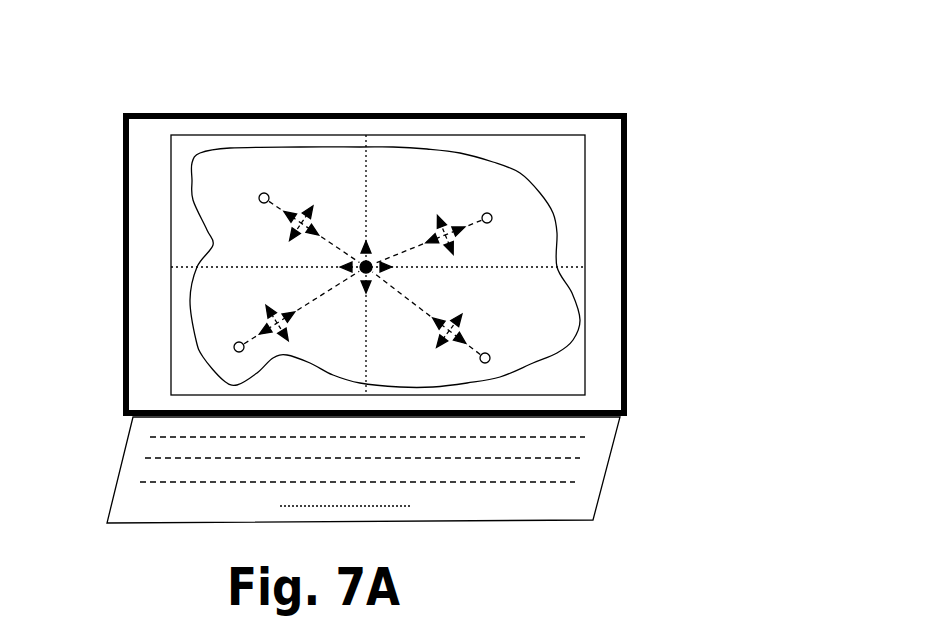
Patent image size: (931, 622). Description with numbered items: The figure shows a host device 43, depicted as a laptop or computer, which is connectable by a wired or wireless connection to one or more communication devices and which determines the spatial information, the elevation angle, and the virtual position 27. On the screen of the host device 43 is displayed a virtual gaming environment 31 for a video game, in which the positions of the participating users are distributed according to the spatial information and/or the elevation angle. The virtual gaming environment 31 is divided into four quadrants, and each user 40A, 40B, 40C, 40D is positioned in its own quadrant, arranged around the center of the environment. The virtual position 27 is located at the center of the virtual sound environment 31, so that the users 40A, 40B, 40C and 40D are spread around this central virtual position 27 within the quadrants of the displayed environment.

The host device 43 is at (650, 55).
The virtual gaming environment 31 is at (557, 183).
The virtual position 27 is at (370, 258).
The user 40A is at (265, 192).
The user 40B is at (487, 212).
The user 40C is at (491, 356).
The user 40D is at (218, 345).